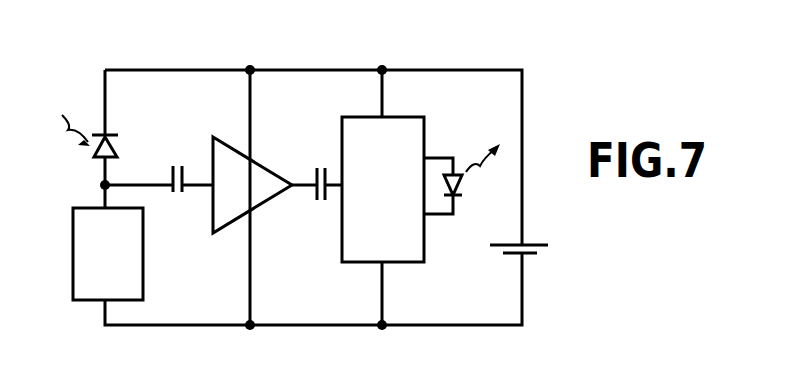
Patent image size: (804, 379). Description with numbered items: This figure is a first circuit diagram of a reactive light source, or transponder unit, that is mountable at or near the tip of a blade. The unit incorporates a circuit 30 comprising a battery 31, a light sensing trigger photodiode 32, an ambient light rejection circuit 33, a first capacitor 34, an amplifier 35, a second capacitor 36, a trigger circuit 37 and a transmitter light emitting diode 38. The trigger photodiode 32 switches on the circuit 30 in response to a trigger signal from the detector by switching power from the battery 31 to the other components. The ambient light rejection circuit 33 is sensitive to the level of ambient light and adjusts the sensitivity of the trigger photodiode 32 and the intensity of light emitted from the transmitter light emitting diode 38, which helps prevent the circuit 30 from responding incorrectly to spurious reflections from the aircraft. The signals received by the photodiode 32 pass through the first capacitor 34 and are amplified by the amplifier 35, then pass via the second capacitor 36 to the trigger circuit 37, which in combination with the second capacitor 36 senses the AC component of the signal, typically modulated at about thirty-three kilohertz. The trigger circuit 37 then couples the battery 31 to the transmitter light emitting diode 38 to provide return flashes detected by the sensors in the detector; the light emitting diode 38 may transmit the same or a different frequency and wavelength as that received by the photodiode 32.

The circuit 30 is at (560, 22).
The battery 31 is at (548, 250).
The light sensing trigger photodiode 32 is at (118, 148).
The ambient light rejection circuit 33 is at (73, 300).
The first capacitor 34 is at (187, 162).
The amplifier 35 is at (256, 160).
The second capacitor 36 is at (321, 203).
The trigger circuit 37 is at (423, 118).
The transmitter light emitting diode 38 is at (470, 184).